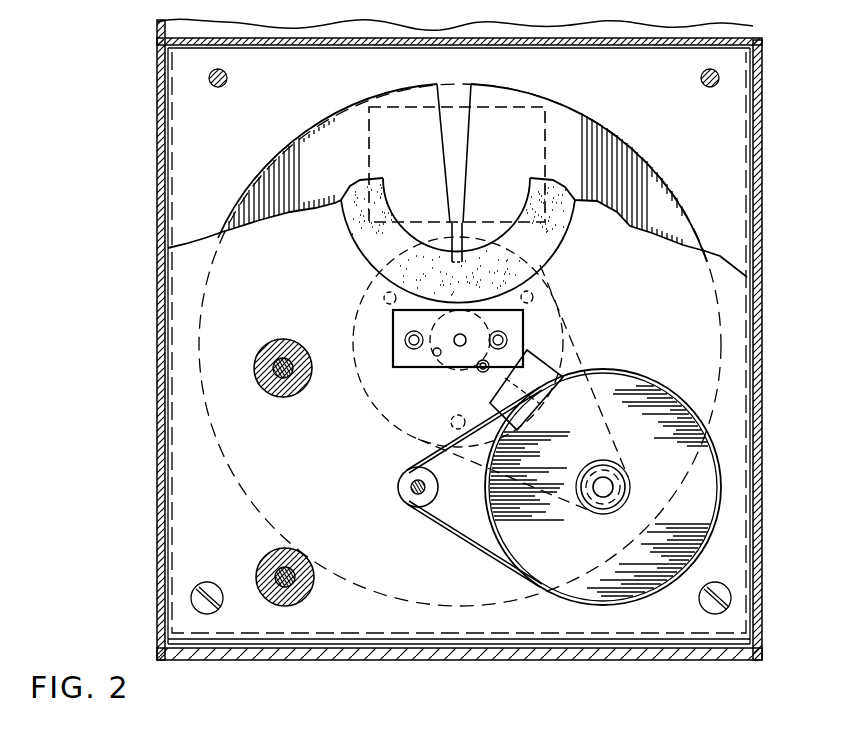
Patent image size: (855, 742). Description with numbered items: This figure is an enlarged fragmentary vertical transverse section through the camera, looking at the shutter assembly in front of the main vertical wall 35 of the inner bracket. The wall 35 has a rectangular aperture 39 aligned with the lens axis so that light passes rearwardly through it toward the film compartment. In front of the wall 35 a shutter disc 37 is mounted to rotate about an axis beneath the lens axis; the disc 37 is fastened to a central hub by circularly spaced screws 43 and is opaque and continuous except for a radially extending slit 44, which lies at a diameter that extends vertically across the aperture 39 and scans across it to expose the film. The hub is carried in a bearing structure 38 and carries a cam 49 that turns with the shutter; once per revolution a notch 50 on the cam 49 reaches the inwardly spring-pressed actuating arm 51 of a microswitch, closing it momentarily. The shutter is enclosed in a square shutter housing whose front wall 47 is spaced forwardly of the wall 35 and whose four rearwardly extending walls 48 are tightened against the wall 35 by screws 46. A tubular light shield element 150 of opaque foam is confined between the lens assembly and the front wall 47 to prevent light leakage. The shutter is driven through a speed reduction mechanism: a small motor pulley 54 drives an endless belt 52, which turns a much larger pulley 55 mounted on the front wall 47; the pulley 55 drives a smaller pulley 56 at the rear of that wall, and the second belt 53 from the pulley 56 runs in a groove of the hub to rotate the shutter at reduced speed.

The main vertical wall 35 is at (725, 130).
The shutter disc 37 is at (650, 187).
The bearing structure 38 is at (525, 332).
The rectangular aperture 39 is at (462, 110).
The screws 43 is at (540, 290).
The slit 44 is at (463, 90).
The screws 46 is at (229, 79).
The front wall 47 is at (733, 300).
The rearwardly extending walls 48 is at (757, 222).
The cam 49 is at (447, 357).
The notch 50 is at (433, 354).
The actuating arm 51 is at (487, 370).
The endless belt 52 is at (465, 540).
The endless belt 53 is at (375, 452).
The small pulley 54 is at (402, 492).
The second pulley 55 is at (710, 502).
The smaller pulley 56 is at (630, 470).
The tubular light shield element 150 is at (372, 243).